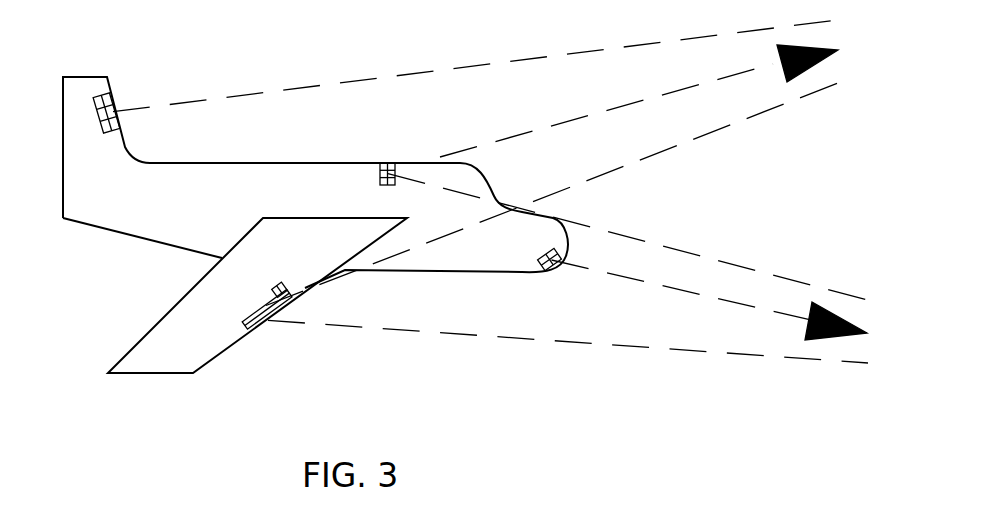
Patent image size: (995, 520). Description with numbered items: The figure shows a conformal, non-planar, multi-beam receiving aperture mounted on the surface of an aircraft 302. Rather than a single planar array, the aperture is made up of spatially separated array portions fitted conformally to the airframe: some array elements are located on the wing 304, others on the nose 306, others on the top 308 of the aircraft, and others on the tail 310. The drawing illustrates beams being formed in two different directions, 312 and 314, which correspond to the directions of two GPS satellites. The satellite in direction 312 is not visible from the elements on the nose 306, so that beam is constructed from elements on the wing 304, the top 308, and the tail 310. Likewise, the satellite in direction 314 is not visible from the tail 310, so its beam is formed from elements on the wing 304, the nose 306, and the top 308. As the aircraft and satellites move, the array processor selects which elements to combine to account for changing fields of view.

The aircraft 302 is at (99, 259).
The wing 304 is at (257, 327).
The nose 306 is at (550, 268).
The top 308 is at (390, 163).
The tail 310 is at (117, 96).
The first beam direction 312 is at (800, 72).
The second beam direction 314 is at (837, 337).